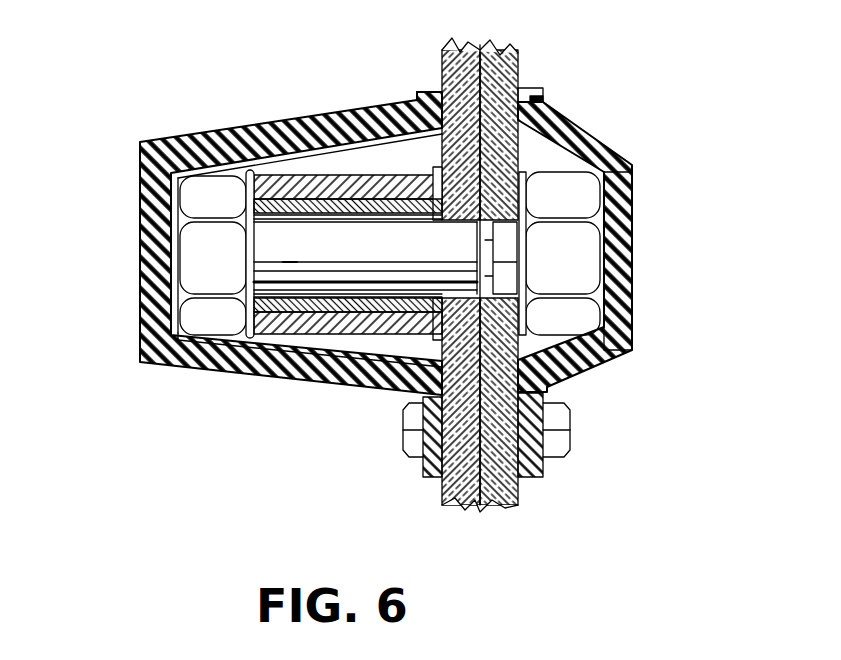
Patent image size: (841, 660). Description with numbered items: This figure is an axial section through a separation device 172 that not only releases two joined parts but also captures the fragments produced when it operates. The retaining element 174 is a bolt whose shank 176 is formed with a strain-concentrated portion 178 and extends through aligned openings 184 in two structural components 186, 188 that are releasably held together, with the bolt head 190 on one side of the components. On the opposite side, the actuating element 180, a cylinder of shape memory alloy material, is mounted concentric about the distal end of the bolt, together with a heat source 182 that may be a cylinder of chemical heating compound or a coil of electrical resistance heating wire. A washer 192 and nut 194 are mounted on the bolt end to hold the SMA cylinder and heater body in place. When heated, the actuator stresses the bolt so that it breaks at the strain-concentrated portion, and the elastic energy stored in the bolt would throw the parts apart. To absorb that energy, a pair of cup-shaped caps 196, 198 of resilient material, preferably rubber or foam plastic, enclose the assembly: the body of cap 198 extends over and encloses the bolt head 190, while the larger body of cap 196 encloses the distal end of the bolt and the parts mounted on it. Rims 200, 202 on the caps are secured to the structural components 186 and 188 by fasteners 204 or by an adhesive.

The separation device 172 is at (527, 73).
The retaining element 174 is at (337, 165).
The shank 176 is at (277, 230).
The strain-concentrated portion 178 is at (620, 215).
The actuating element 180 is at (365, 303).
The heat source 182 is at (310, 325).
The aligned openings 184 is at (593, 290).
The structural component 186 is at (448, 488).
The structural component 188 is at (520, 497).
The bolt head 190 is at (580, 252).
The washer 192 is at (235, 330).
The nut 194 is at (190, 257).
The cup-shaped cap 196 is at (140, 196).
The cup-shaped cap 198 is at (618, 163).
The rim 200 is at (417, 92).
The rim 202 is at (543, 97).
The fasteners 204 is at (570, 412).